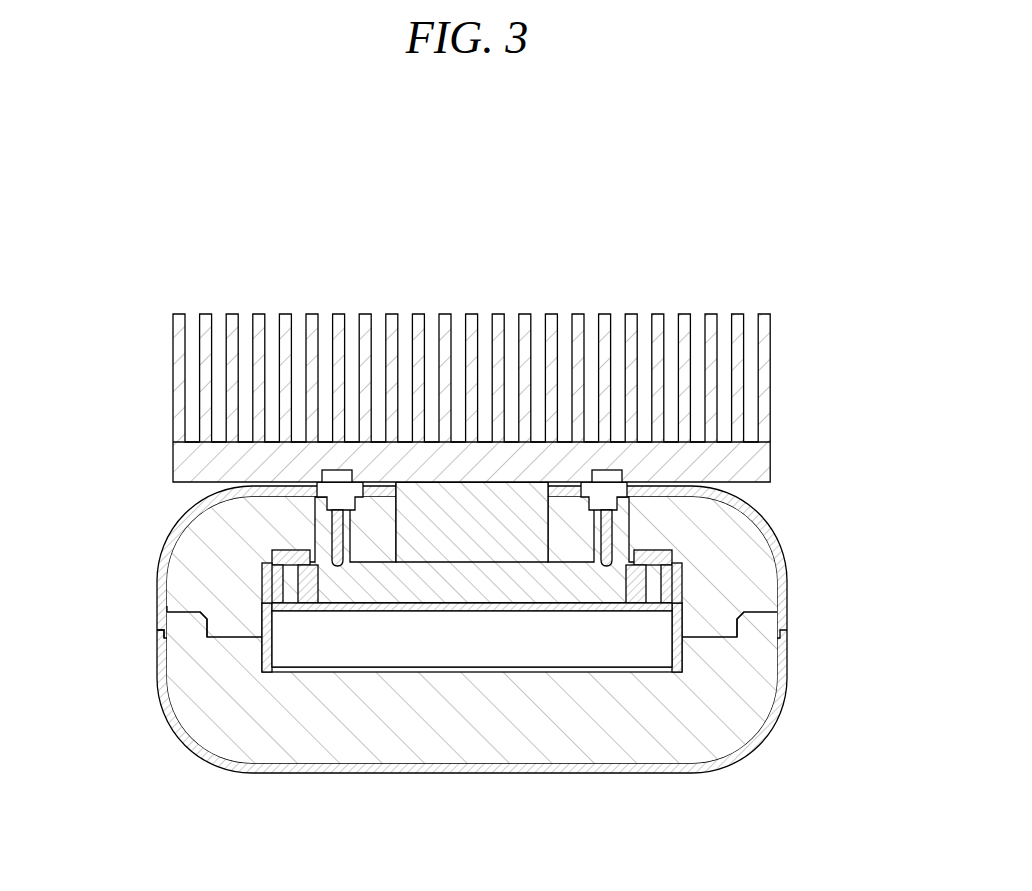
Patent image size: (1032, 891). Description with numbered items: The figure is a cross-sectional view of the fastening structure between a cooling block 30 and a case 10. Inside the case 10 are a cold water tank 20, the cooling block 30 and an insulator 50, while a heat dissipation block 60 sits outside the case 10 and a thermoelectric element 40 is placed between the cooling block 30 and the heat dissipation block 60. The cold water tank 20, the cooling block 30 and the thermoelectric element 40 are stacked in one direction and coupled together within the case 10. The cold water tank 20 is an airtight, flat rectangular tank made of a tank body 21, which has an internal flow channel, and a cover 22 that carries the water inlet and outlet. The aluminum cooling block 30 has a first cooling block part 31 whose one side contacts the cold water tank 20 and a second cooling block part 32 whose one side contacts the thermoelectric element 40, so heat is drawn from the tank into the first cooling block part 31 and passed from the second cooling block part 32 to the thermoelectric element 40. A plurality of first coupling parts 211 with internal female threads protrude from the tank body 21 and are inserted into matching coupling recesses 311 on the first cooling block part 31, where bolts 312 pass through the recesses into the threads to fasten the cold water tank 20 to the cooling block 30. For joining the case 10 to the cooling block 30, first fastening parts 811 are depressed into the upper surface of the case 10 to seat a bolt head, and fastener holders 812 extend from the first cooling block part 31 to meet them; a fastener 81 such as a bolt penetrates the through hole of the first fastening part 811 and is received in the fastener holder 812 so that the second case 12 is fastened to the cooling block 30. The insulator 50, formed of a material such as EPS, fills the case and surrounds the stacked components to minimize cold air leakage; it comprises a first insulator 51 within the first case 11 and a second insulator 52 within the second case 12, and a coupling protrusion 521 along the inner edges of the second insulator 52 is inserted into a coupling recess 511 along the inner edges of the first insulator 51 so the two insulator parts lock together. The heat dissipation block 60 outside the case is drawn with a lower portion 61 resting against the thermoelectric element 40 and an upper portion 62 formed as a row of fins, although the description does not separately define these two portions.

The case 10 is at (99, 623).
The first case 11 is at (120, 652).
The second case 12 is at (160, 600).
The cold water tank 20 is at (488, 747).
The tank body 21 is at (552, 650).
The cover 22 is at (620, 672).
The first coupling part 211 is at (677, 632).
The cooling block 30 is at (472, 686).
The first cooling block part 31 is at (418, 588).
The second cooling block part 32 is at (470, 540).
The coupling recess 311 is at (266, 605).
The bolt 312 is at (290, 580).
The thermoelectric element 40 is at (468, 486).
The insulator 50 is at (471, 642).
The first insulator 51 is at (750, 670).
The second insulator 52 is at (742, 572).
The coupling recess 511 is at (207, 636).
The coupling protrusion 521 is at (716, 636).
The heat dissipation block 60 is at (542, 398).
The heat sink base 61 is at (765, 467).
The heat sink fins 62 is at (765, 380).
The fastener 81 is at (472, 660).
The first fastening part 811 is at (320, 507).
The fastener holder 812 is at (318, 521).